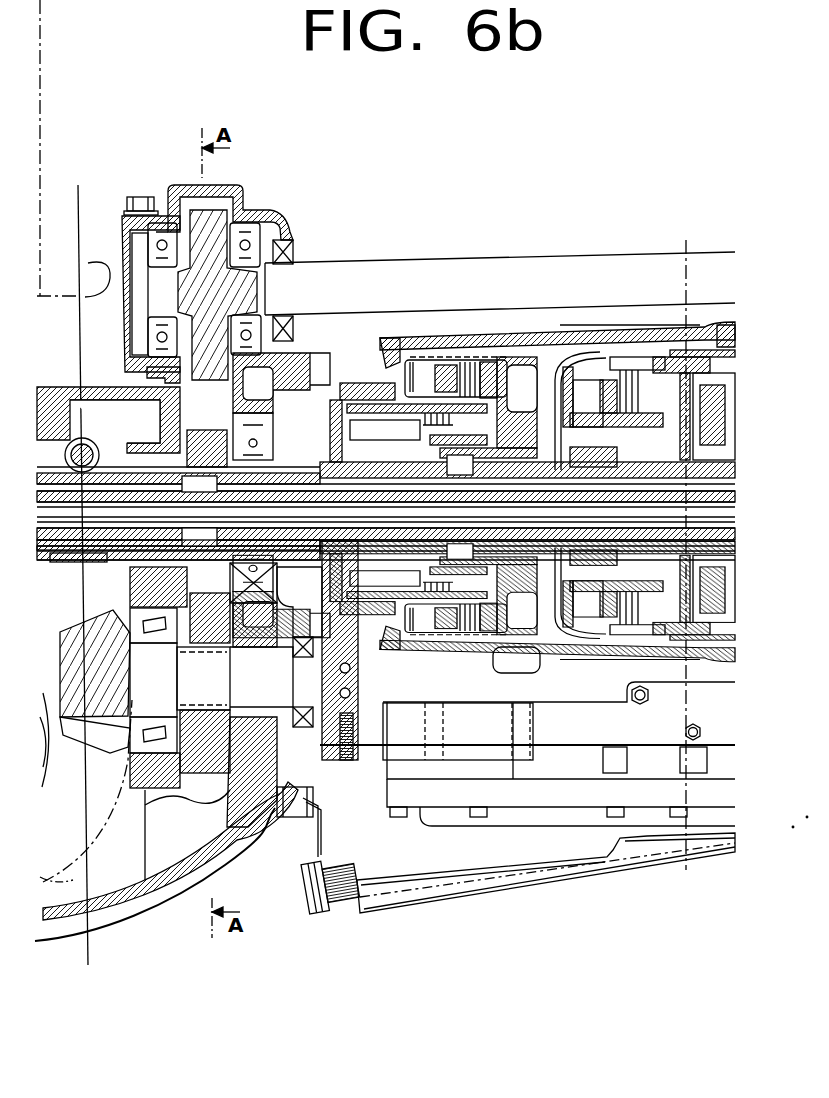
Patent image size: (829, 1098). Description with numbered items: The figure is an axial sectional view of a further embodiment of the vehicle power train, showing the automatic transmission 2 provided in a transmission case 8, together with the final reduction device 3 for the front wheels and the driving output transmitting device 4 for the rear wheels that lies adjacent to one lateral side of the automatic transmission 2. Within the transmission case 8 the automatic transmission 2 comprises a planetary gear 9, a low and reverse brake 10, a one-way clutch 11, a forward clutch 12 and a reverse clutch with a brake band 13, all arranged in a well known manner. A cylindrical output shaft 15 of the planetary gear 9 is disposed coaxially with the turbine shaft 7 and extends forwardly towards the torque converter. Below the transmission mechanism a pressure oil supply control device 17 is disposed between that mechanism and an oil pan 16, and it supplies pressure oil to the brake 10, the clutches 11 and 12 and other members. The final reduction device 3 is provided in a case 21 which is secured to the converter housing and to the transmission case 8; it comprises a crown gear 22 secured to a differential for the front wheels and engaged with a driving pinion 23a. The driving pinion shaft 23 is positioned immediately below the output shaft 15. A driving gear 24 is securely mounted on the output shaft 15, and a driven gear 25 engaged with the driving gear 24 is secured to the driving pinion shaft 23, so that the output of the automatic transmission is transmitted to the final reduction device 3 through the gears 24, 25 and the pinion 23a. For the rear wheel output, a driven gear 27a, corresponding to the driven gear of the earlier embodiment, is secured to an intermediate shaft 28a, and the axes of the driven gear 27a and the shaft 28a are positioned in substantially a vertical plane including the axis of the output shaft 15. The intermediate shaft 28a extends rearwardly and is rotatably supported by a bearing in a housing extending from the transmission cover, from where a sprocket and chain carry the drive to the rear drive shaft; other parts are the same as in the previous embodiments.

The automatic transmission 2 is at (417, 332).
The final reduction device 3 is at (62, 936).
The driving output transmitting device 4 is at (275, 210).
The turbine shaft 7 is at (60, 484).
The transmission case 8 is at (403, 350).
The planetary gear 9 is at (370, 400).
The low and reverse brake 10 is at (471, 352).
The one-way clutch 11 is at (504, 365).
The forward clutch 12 is at (630, 372).
The brake band 13 is at (703, 352).
The output shaft 15 is at (300, 400).
The oil pan 16 is at (458, 883).
The pressure oil supply control device 17 is at (572, 782).
The case 21 is at (135, 910).
The crown gear 22 is at (86, 787).
The driving pinion shaft 23 is at (200, 690).
The driving pinion 23a is at (73, 630).
The driving gear 24 is at (160, 567).
The driven gear 25 is at (205, 797).
The driven gear 27a is at (196, 258).
The intermediate shaft 28a is at (556, 280).